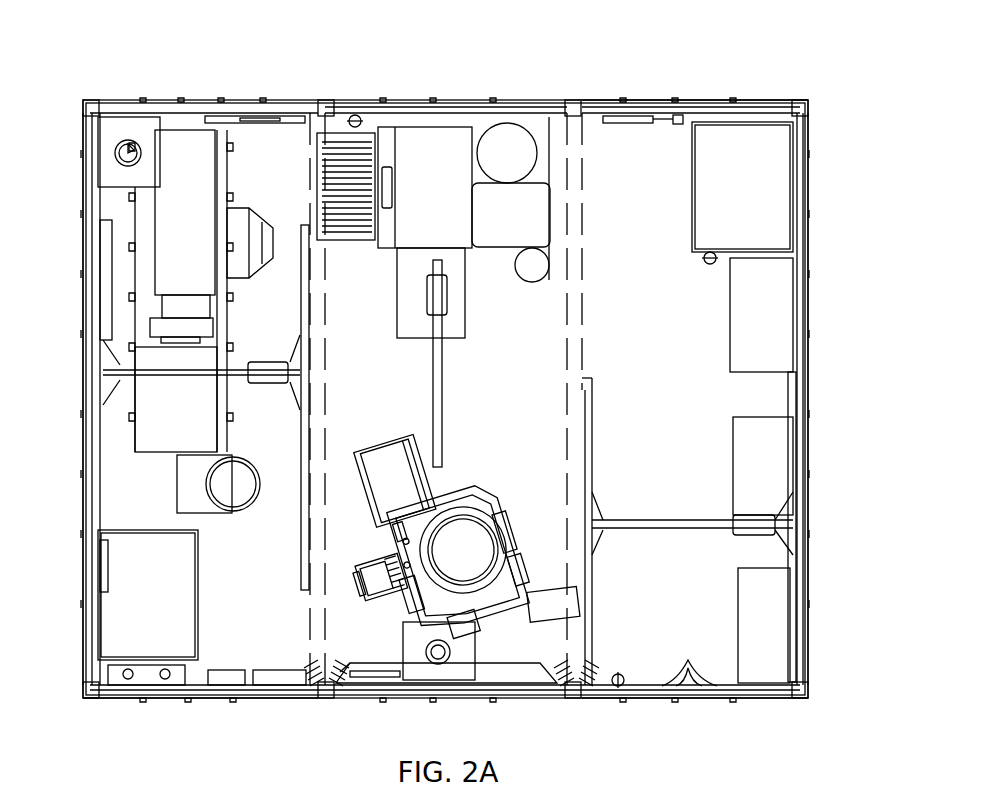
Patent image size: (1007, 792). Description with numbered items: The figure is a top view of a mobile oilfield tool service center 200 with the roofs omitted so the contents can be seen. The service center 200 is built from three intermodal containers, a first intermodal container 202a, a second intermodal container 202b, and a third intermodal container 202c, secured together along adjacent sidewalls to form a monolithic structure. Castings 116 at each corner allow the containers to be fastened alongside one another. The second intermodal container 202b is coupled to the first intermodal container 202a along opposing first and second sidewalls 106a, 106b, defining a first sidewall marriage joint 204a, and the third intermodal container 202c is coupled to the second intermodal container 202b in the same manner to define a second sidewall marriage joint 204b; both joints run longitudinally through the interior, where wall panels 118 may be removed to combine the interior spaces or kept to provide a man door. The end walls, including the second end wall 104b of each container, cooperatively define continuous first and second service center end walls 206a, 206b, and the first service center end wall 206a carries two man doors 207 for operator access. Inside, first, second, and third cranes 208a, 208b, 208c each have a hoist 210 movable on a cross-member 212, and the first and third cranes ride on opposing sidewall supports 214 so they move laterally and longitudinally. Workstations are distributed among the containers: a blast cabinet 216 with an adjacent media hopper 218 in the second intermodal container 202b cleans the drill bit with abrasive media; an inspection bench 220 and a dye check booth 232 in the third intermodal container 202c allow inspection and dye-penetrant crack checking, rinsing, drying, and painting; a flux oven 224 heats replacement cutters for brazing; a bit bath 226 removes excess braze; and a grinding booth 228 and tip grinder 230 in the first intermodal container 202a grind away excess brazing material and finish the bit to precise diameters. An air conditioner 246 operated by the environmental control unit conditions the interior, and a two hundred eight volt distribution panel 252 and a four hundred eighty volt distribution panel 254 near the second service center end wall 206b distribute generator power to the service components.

The mobile oilfield tool service center 200 is at (213, 52).
The castings 116 is at (85, 100).
The first intermodal container 202a is at (259, 92).
The second intermodal container 202b is at (453, 92).
The third intermodal container 202c is at (730, 92).
The first service center end wall 206a is at (620, 92).
The second service center end wall 206b is at (253, 708).
The second end wall 104b is at (648, 708).
The first sidewall 106a is at (70, 393).
The second sidewall 106b is at (812, 295).
The man doors 207 is at (263, 126).
The tip grinder 230 is at (172, 226).
The cross-member 212 is at (172, 386).
The first crane 208a is at (266, 360).
The second crane 208b is at (410, 344).
The third crane 208c is at (725, 503).
The hoist 210 is at (266, 390).
The sidewall supports 214 is at (101, 489).
The bit bath 226 is at (218, 492).
The grinding booth 228 is at (131, 607).
The 208V distribution panel 252 is at (215, 686).
The 480V distribution panel 254 is at (283, 686).
The blast cabinet 216 is at (416, 196).
The media hopper 218 is at (494, 167).
The first sidewall marriage joint 204a is at (328, 406).
The second sidewall marriage joint 204b is at (566, 406).
The flux oven 224 is at (389, 502).
The air conditioner 246 is at (505, 668).
The dye check booth 232 is at (733, 195).
The inspection bench 220 is at (746, 477).
The wall panels 118 is at (690, 660).